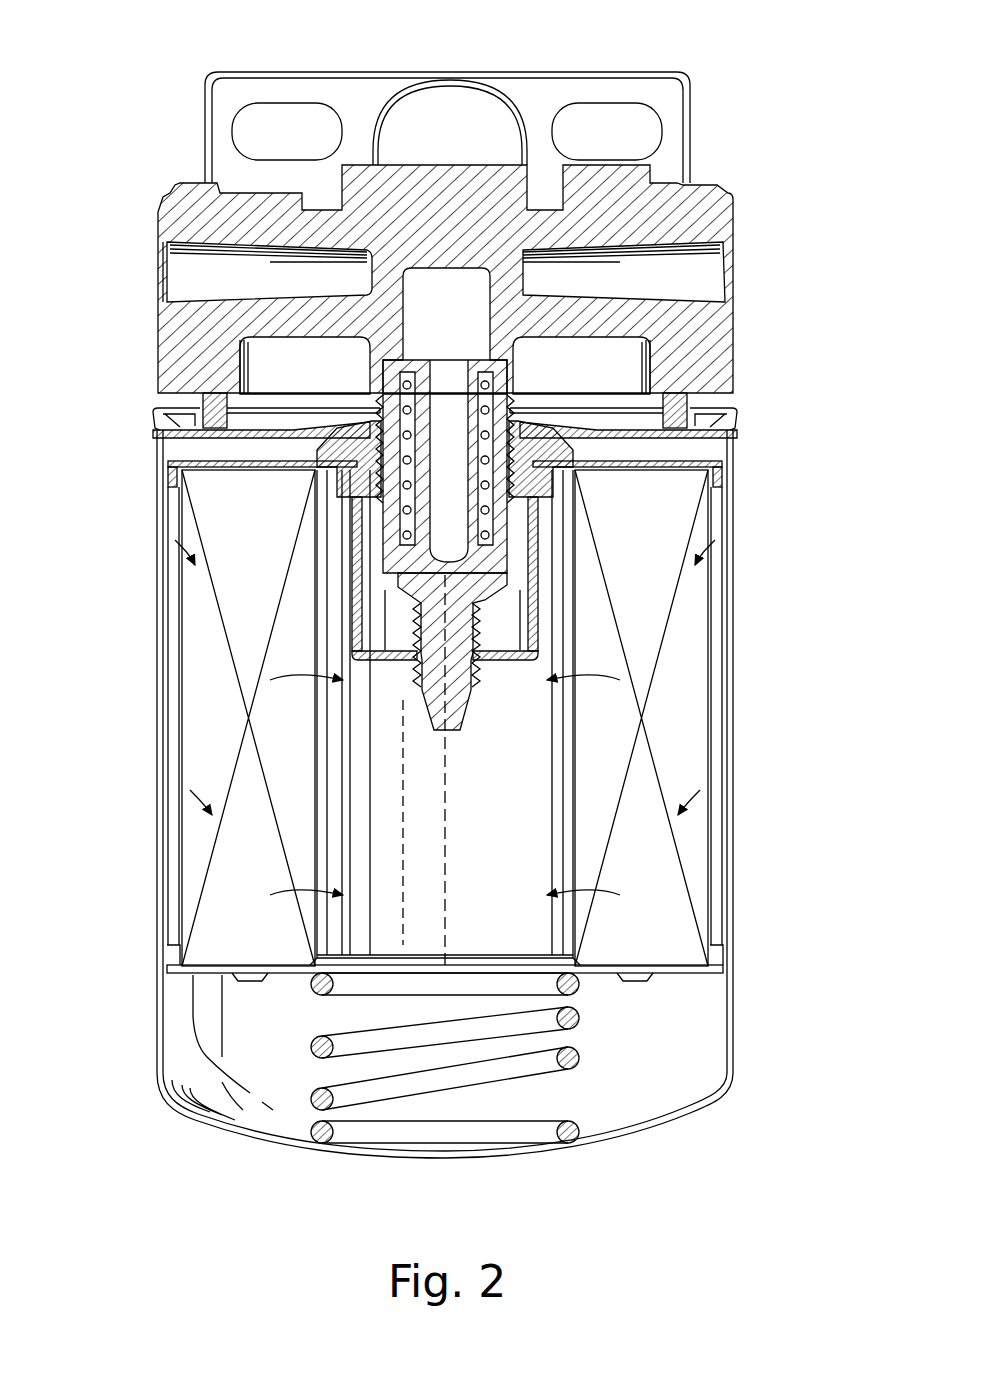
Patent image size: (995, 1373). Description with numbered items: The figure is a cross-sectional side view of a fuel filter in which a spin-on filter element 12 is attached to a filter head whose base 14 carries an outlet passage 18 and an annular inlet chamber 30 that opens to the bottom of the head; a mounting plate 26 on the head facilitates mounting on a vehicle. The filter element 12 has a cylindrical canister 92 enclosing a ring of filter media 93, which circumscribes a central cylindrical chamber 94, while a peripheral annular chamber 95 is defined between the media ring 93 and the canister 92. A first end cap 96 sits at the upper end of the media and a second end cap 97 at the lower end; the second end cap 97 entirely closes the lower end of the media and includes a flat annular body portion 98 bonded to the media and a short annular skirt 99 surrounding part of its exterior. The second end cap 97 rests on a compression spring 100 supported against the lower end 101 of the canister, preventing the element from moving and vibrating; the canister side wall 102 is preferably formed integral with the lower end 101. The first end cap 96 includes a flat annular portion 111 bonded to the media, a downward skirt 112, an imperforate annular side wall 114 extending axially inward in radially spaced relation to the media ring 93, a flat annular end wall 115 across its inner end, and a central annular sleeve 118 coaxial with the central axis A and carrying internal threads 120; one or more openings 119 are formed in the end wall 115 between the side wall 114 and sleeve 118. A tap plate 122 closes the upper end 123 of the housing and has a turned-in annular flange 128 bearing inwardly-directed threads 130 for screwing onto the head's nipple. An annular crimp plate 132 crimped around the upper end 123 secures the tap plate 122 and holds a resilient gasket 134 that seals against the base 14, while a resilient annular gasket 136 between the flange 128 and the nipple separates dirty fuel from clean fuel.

The spin-on filter element 12 is at (748, 755).
The base 14 is at (735, 215).
The outlet passage 18 is at (185, 270).
The mounting plate 26 is at (620, 88).
The inlet chamber 30 is at (250, 372).
The canister 92 is at (740, 705).
The filter media ring 93 is at (700, 632).
The central cylindrical chamber 94 is at (490, 862).
The peripheral annular chamber 95 is at (720, 840).
The first end cap 96 is at (160, 450).
The second end cap 97 is at (185, 975).
The flat annular body portion 98 is at (198, 972).
The annular skirt 99 is at (170, 960).
The compression spring 100 is at (578, 1052).
The lower end 101 is at (665, 1125).
The side wall 102 is at (724, 921).
The flat annular portion 111 is at (200, 507).
The annular skirt 112 is at (170, 474).
The imperforate annular side wall 114 is at (355, 635).
The flat annular end wall 115 is at (245, 728).
The central annular sleeve 118 is at (443, 705).
The openings 119 is at (495, 678).
The internal threads 120 is at (443, 738).
The tap plate 122 is at (152, 412).
The upper end 123 is at (737, 428).
The turned-in annular flange 128 is at (343, 553).
The threads 130 is at (640, 498).
The crimp plate 132 is at (720, 470).
The gasket 134 is at (735, 397).
The gasket 136 is at (365, 475).
The central axis A is at (443, 897).